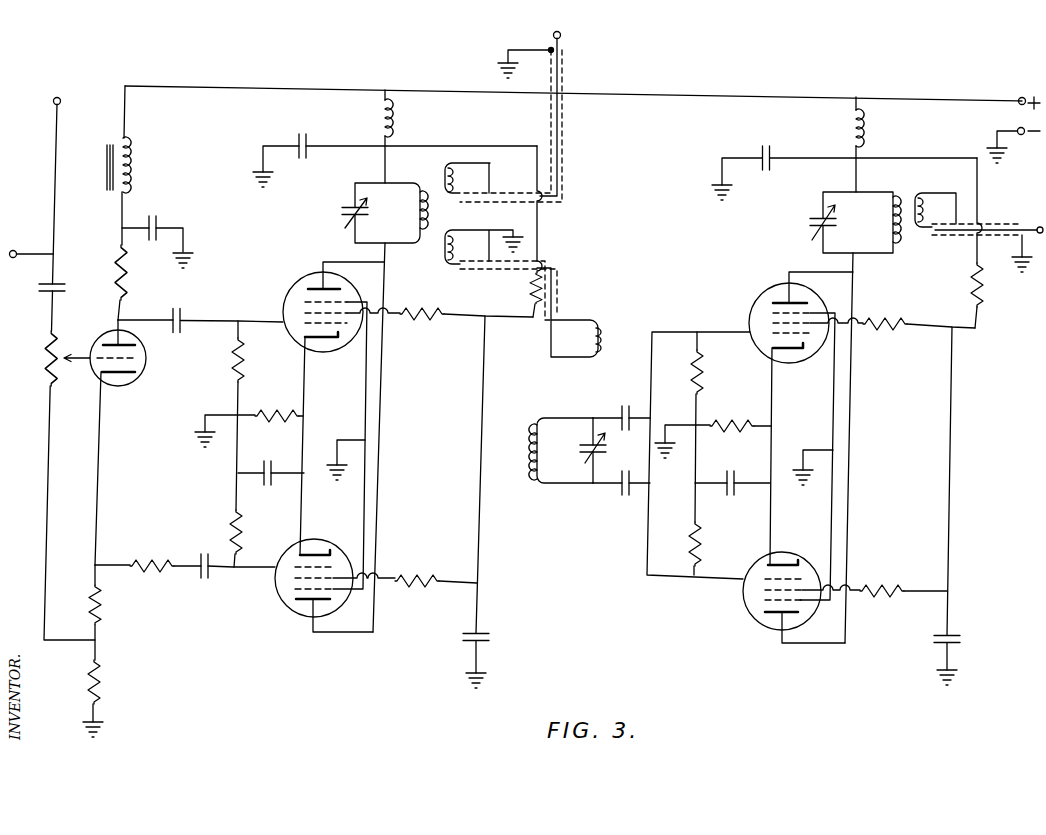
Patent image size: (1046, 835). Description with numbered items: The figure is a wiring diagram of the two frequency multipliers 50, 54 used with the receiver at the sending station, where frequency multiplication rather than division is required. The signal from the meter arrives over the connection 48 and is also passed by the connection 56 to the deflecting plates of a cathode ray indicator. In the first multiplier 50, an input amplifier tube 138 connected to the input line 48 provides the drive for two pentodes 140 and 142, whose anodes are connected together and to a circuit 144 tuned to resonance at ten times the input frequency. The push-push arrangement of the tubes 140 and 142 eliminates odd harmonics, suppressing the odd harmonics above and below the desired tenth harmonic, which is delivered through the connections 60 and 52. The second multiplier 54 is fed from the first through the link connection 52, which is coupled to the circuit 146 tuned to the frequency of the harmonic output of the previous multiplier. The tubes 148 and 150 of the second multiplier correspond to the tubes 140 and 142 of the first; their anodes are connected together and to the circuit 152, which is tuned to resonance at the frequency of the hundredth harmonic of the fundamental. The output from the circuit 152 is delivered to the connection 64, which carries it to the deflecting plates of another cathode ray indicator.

The connection 48 is at (40, 255).
The connection 56 is at (57, 158).
The connection 60 is at (560, 131).
The connection 52 is at (560, 295).
The connection 64 is at (995, 228).
The input amplifier tube 138 is at (121, 386).
The pentode 140 is at (322, 354).
The pentode 142 is at (329, 541).
The circuit 144 is at (360, 175).
The circuit 146 is at (576, 413).
The tube 148 is at (754, 303).
The tube 150 is at (790, 552).
The circuit 152 is at (886, 266).
The frequency multiplier 50 is at (306, 647).
The frequency multiplier 54 is at (729, 604).